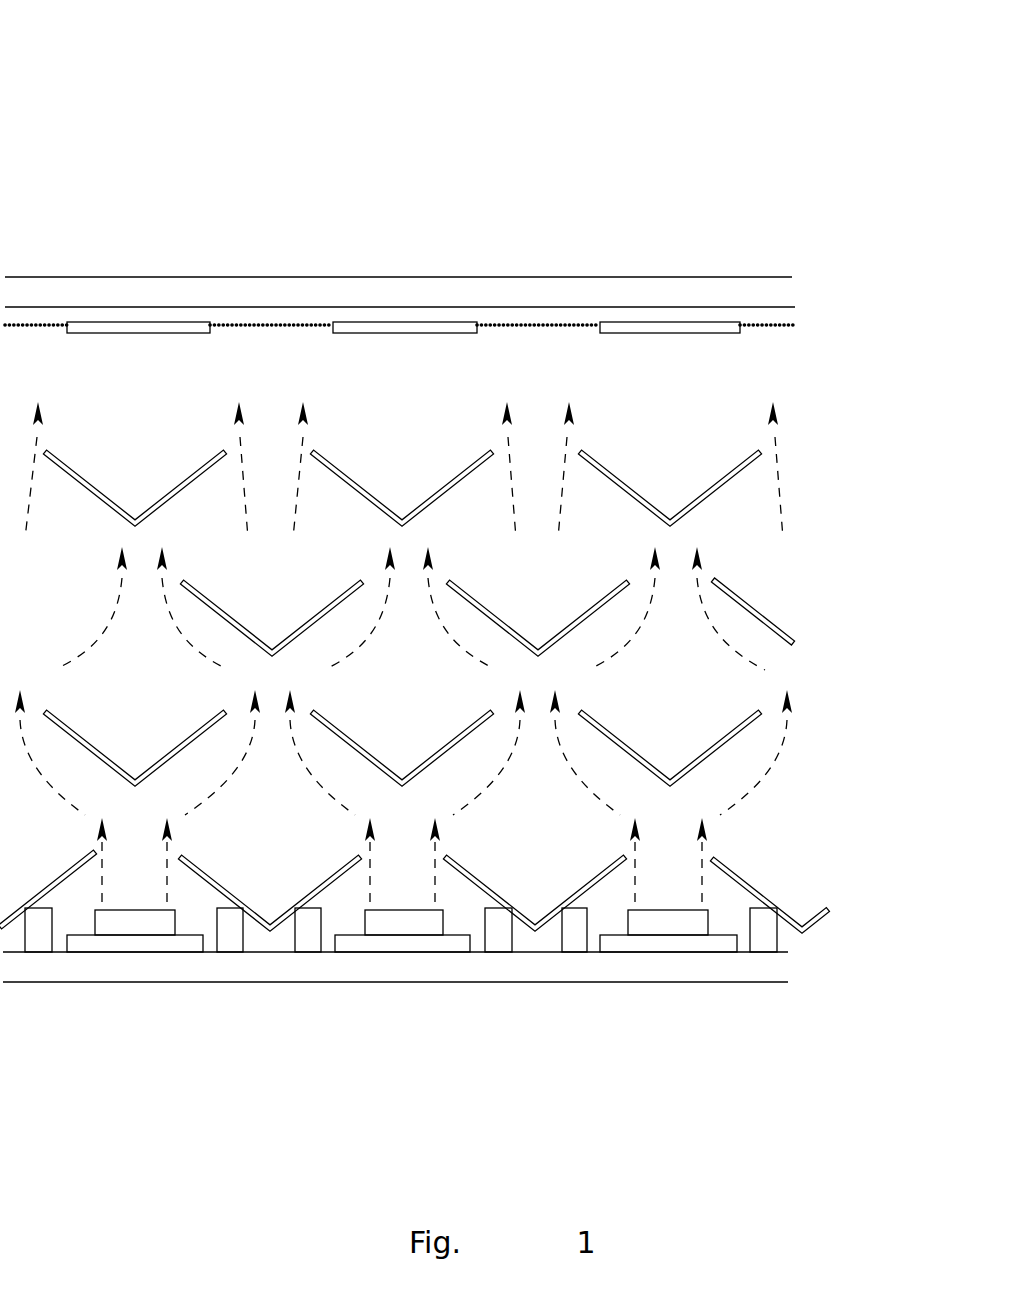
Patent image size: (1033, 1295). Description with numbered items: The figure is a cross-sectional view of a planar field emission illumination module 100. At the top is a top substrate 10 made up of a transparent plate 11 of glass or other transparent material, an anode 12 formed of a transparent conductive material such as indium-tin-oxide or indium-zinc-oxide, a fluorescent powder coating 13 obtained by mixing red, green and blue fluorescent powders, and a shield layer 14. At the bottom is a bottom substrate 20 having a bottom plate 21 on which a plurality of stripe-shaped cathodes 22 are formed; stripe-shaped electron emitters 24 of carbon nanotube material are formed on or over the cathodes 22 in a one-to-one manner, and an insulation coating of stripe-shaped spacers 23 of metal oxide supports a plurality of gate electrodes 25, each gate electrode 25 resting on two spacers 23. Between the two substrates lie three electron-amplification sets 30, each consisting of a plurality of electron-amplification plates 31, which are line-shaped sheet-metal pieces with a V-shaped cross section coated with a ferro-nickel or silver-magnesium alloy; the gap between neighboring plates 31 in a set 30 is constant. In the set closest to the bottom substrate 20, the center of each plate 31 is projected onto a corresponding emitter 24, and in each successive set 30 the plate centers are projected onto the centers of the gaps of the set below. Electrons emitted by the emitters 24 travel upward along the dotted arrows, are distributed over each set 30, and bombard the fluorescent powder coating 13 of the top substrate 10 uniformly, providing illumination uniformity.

The planar field emission illumination module 100 is at (158, 90).
The top substrate 10 is at (77, 207).
The transparent plate 11 is at (85, 292).
The anode 12 is at (157, 317).
The fluorescent powder coating 13 is at (267, 322).
The shield layer 14 is at (410, 325).
The bottom substrate 20 is at (383, 1071).
The bottom plate 21 is at (382, 968).
The stripe-shaped cathode 22 is at (700, 945).
The stripe-shaped spacer 23 is at (573, 940).
The stripe-shaped electron emitter 24 is at (648, 927).
The gate electrode 25 is at (478, 883).
The electron-amplification set 30 is at (855, 455).
The electron-amplification plate 31 is at (730, 483).